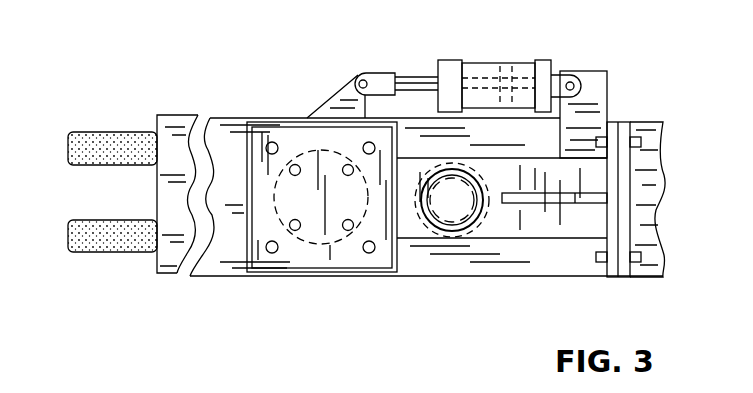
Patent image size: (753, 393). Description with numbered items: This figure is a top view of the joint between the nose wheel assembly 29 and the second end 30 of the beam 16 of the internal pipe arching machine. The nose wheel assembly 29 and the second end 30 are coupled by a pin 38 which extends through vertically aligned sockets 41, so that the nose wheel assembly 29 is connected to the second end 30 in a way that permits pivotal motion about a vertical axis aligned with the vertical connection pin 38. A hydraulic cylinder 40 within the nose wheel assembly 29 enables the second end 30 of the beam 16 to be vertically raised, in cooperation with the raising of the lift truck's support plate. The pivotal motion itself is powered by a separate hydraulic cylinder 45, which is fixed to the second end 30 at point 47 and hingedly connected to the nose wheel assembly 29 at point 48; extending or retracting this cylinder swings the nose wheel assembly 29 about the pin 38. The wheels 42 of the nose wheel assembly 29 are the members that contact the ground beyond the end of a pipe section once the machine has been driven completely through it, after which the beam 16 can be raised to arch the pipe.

The beam 16 is at (655, 192).
The nose wheel assembly 29 is at (262, 105).
The second end 30 is at (622, 120).
The pin 38 is at (440, 215).
The hydraulic cylinder 40 is at (300, 121).
The sockets 41 is at (460, 160).
The wheels 42 is at (76, 220).
The hydraulic cylinder 45 is at (522, 32).
The point 47 is at (580, 78).
The point 48 is at (378, 52).